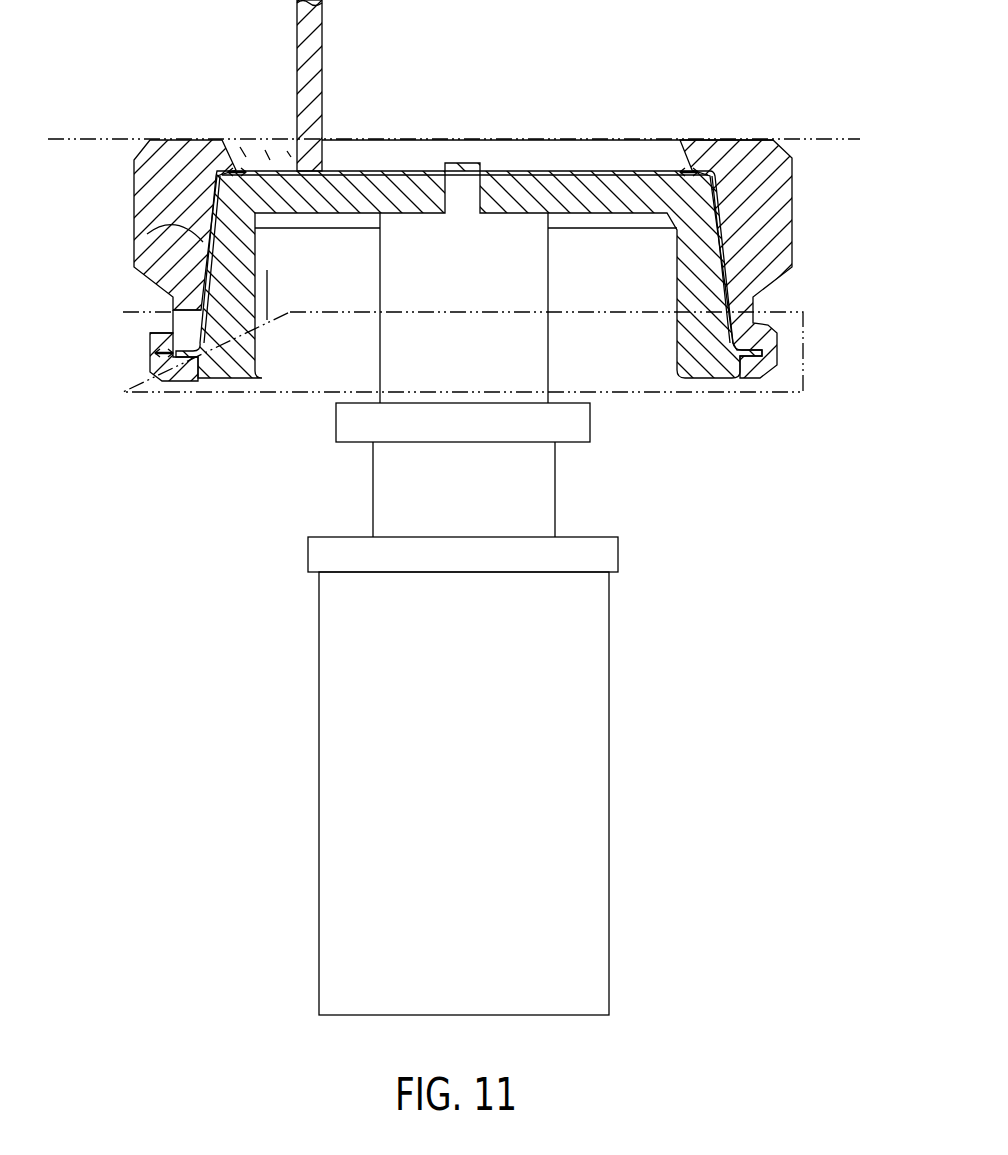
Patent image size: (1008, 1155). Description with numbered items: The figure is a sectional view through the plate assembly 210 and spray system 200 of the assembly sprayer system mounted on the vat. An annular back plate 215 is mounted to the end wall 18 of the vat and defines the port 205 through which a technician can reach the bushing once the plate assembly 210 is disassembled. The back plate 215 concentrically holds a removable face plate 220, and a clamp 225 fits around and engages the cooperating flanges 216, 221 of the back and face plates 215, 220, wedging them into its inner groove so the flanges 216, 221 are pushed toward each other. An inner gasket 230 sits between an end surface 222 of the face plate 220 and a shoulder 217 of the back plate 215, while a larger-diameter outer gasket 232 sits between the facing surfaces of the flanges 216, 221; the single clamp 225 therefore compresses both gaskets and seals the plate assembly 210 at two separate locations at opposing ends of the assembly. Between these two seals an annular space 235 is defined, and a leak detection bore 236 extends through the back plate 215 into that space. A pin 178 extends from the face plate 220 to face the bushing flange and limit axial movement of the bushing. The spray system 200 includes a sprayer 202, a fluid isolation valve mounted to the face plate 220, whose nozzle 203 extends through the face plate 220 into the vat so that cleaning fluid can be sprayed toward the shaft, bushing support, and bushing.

The end wall 18 is at (82, 136).
The pin 178 is at (303, 60).
The spray system 200 is at (529, 709).
The sprayer 202 is at (485, 762).
The nozzle 203 is at (466, 166).
The port 205 is at (632, 153).
The plate assembly 210 is at (808, 190).
The back plate 215 is at (150, 204).
The flange of back plate 216 is at (173, 333).
The shoulder 217 is at (688, 171).
The face plate 220 is at (630, 292).
The flange of face plate 221 is at (168, 366).
The end surface 222 is at (538, 172).
The clamp 225 is at (793, 378).
The inner gasket 230 is at (236, 170).
The outer gasket 232 is at (160, 355).
The annular space 235 is at (143, 240).
The leak detection bore 236 is at (173, 308).